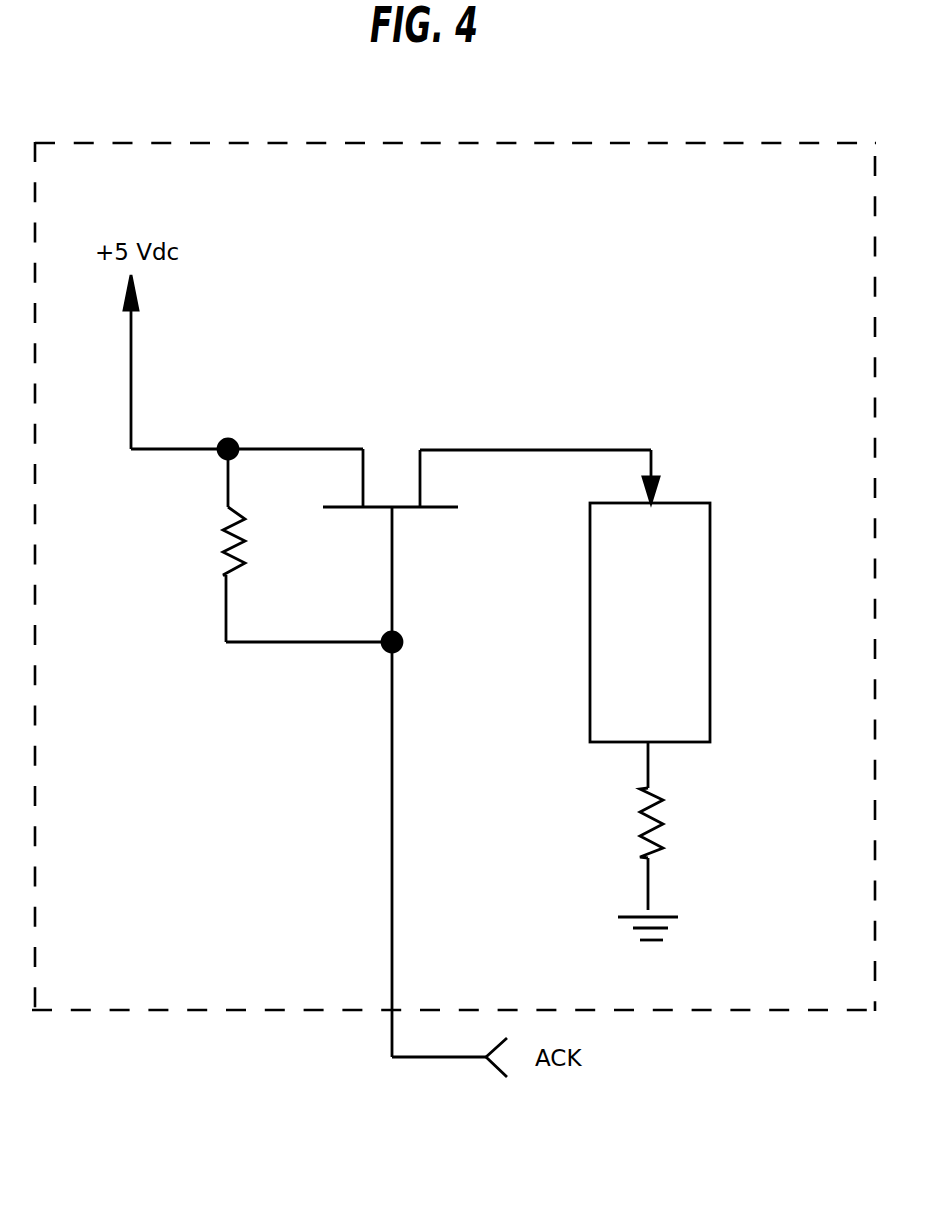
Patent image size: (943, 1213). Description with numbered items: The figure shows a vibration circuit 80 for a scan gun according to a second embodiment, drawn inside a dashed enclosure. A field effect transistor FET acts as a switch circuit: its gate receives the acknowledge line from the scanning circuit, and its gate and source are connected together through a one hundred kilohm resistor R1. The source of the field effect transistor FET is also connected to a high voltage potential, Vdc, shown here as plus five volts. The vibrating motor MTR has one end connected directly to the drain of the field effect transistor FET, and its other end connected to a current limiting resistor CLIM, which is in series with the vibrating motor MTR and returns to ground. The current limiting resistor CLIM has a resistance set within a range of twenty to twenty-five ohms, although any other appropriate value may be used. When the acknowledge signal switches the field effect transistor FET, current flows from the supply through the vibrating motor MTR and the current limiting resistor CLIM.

The vibration circuit 80 is at (460, 125).
The resistor R1 is at (225, 545).
The field effect transistor FET is at (402, 450).
The vibrating motor MTR is at (650, 622).
The current limiting resistor CLIM is at (648, 823).